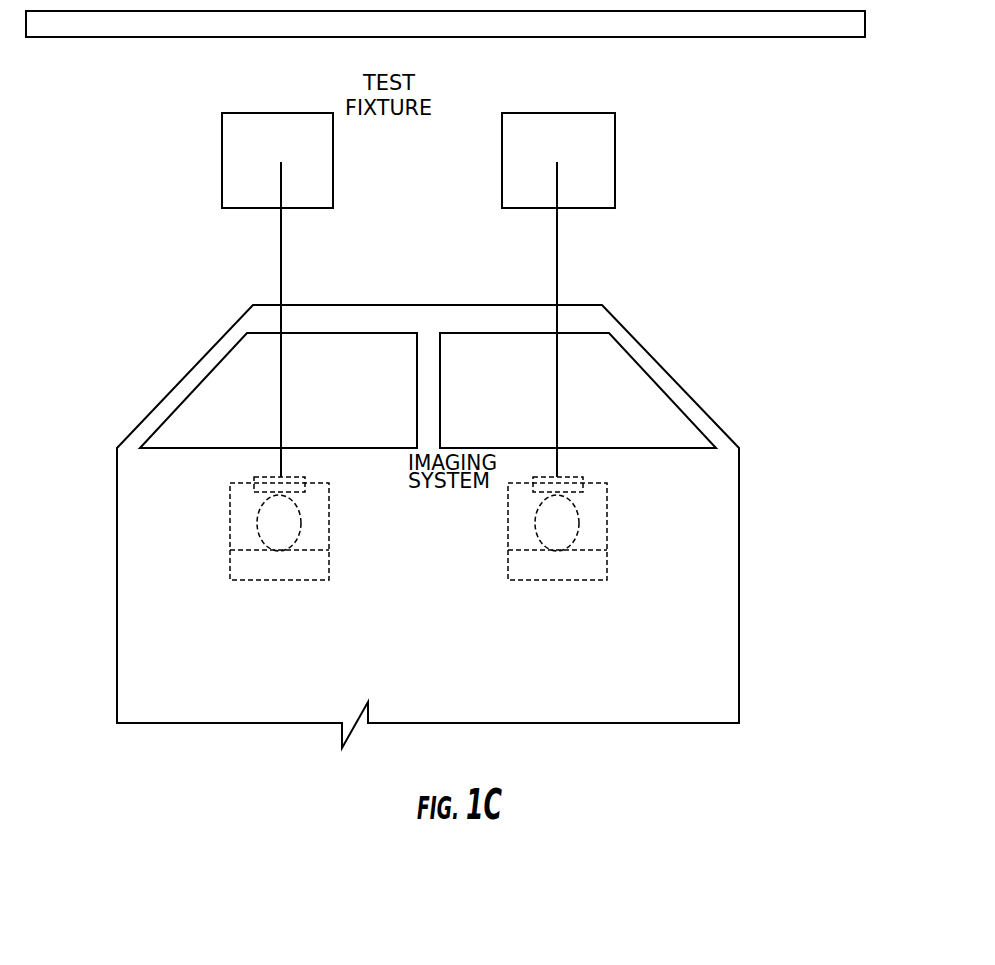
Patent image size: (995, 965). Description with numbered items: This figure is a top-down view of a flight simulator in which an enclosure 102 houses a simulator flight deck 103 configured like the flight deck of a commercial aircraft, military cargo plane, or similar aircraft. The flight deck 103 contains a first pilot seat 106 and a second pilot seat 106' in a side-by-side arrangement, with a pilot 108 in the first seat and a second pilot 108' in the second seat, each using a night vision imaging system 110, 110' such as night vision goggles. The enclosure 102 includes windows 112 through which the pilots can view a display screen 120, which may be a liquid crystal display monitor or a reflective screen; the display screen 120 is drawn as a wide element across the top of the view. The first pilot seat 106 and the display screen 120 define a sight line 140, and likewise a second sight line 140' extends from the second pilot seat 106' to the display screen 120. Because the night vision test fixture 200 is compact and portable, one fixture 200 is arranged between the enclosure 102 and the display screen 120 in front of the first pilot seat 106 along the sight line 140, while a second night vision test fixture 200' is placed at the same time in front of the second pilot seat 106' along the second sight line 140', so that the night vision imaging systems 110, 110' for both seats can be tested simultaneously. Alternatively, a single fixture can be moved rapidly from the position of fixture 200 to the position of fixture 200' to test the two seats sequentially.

The display screen 120 is at (803, 38).
The night vision test fixture 200 is at (313, 160).
The second night vision test fixture 200' is at (610, 160).
The sight line 140 is at (316, 319).
The second sight line 140' is at (596, 319).
The windows 112 is at (467, 347).
The night vision imaging system 110 is at (324, 471).
The pilot 108 is at (331, 518).
The first pilot seat 106 is at (324, 531).
The second night vision imaging system 110' is at (608, 471).
The second pilot 108' is at (612, 518).
The second pilot seat 106' is at (606, 531).
The enclosure 102 is at (739, 570).
The simulator flight deck 103 is at (730, 652).